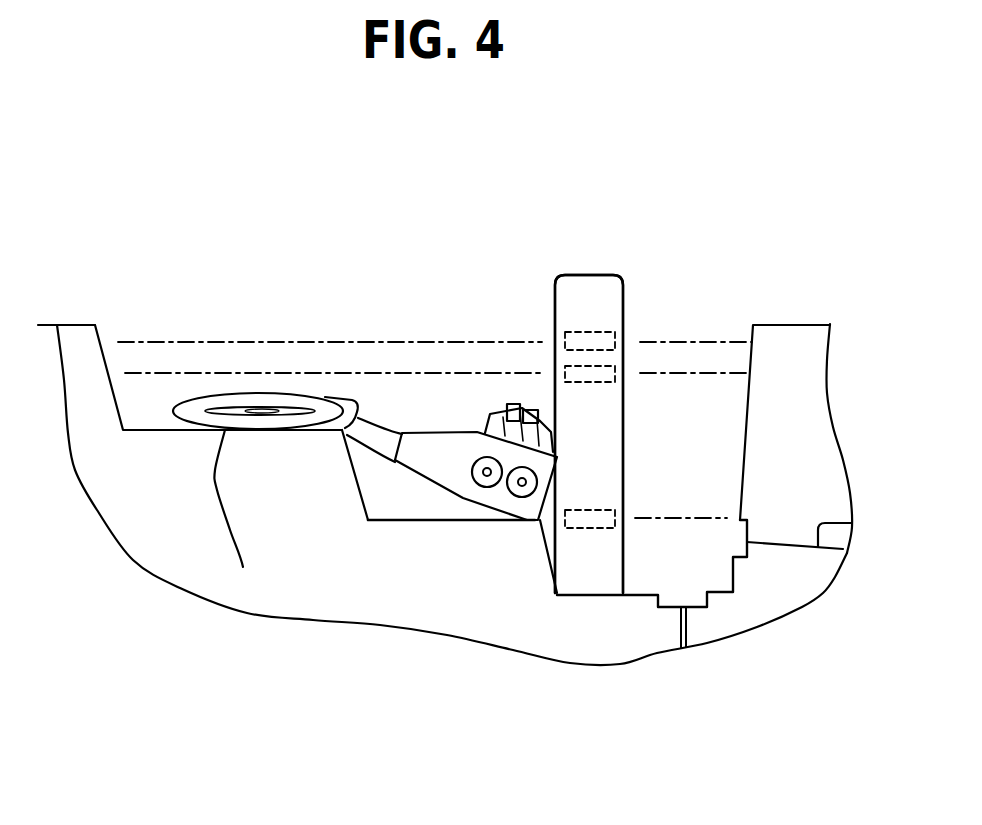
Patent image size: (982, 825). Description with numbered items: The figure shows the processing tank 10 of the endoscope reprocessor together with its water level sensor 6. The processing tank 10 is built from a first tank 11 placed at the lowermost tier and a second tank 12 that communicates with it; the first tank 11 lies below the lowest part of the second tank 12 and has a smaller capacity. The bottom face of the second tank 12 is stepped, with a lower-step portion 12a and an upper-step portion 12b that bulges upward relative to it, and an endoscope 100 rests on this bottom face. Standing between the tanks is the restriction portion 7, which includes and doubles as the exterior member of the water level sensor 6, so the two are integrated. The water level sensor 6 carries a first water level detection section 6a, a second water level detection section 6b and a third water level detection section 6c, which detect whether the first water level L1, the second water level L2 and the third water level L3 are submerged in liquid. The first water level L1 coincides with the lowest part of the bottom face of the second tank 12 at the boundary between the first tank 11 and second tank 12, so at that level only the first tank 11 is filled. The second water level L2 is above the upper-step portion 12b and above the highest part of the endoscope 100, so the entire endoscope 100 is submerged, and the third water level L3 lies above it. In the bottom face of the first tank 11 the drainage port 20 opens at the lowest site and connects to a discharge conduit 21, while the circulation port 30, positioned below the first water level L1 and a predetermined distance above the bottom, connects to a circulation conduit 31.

The processing tank 10 is at (306, 289).
The endoscope 100 is at (437, 433).
The water level sensor 6 is at (582, 275).
The restriction portion 7 is at (589, 397).
The first water level detection section 6a is at (603, 510).
The second water level detection section 6b is at (603, 382).
The third water level detection section 6c is at (603, 331).
The first tank 11 is at (542, 550).
The second tank 12 is at (299, 566).
The lower-step portion 12a is at (425, 520).
The upper-step portion 12b is at (243, 567).
The drainage port 20 is at (700, 607).
The discharge conduit 21 is at (682, 633).
The circulation port 30 is at (747, 532).
The circulation conduit 31 is at (852, 523).
The first water level L1 is at (681, 503).
The second water level L2 is at (437, 360).
The third water level L3 is at (435, 325).